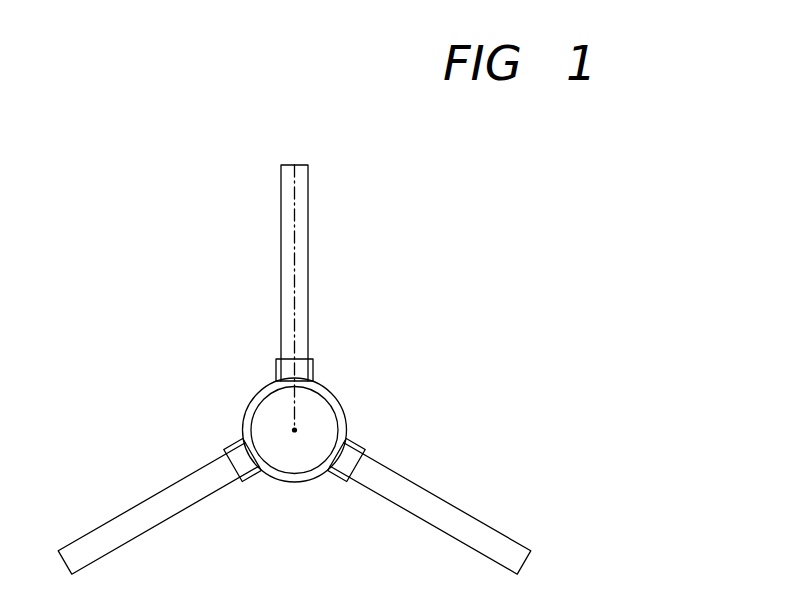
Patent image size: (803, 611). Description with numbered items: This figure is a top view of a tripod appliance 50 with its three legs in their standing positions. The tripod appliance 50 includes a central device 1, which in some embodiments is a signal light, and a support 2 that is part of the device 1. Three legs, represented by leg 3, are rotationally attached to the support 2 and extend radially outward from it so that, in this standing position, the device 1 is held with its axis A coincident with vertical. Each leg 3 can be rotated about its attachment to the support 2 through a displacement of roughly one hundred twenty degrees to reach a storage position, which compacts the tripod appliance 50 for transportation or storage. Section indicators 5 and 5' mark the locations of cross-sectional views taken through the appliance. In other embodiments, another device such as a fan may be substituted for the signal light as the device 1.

The device 1 is at (310, 402).
The support 2 is at (351, 442).
The leg 3 is at (380, 480).
The tripod appliance 50 is at (496, 123).
The section line 5 is at (218, 141).
The section line 5' is at (216, 445).
The axis A is at (294, 430).